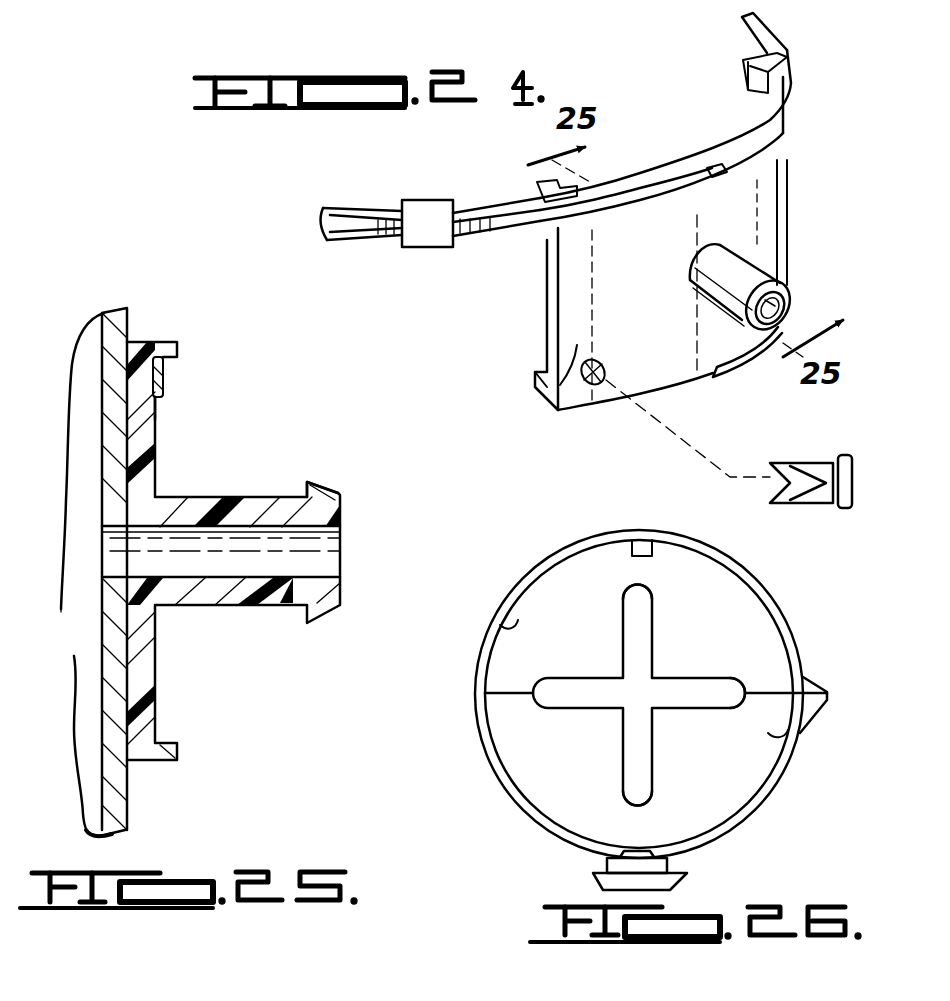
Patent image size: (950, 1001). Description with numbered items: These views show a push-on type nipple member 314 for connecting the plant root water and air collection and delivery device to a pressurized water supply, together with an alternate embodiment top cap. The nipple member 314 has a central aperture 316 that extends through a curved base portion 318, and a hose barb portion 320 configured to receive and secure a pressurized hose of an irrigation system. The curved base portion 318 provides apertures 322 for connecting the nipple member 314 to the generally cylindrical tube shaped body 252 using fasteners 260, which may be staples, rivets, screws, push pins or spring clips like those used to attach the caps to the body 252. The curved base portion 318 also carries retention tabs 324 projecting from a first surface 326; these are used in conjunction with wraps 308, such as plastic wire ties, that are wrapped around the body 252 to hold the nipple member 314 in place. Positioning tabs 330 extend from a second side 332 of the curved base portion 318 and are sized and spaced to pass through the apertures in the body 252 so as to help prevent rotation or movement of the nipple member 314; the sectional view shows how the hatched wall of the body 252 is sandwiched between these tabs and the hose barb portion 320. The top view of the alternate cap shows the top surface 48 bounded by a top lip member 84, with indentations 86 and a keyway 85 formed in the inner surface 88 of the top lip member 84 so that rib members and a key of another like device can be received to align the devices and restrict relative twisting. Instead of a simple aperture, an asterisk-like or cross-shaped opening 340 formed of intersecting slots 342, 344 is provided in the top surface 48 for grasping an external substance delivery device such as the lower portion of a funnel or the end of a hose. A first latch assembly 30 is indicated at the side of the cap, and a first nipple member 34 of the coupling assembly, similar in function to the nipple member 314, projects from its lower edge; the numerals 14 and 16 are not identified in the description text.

In FIG. 24, the wraps 308 is at (483, 206).
In FIG. 25, the wraps 308 is at (163, 379).
In FIG. 24, the retention tabs 324 is at (770, 150).
In FIG. 25, the retention tabs 324 is at (177, 347).
In FIG. 24, the nipple member 314 is at (803, 294).
In FIG. 24, the second side 332 is at (546, 283).
In FIG. 25, the second side 332 is at (98, 666).
In FIG. 24, the curved base portion 318 is at (577, 300).
In FIG. 24, the positioning tabs 330 is at (535, 378).
In FIG. 24, the first surface 326 is at (577, 348).
In FIG. 25, the first surface 326 is at (155, 416).
In FIG. 24, the apertures 322 is at (592, 385).
In FIG. 24, the central aperture 316 is at (740, 327).
In FIG. 25, the central aperture 316 is at (322, 537).
In FIG. 24, the fasteners 260 is at (840, 463).
In FIG. 25, the hose barb portion 320 is at (321, 494).
In FIG. 25, the body 252 is at (113, 793).
In FIG. 26, the outer ring 14 is at (783, 615).
In FIG. 26, the inner ring 16 is at (740, 827).
In FIG. 26, the top lip member 84 is at (553, 564).
In FIG. 26, the indentations 86 is at (510, 624).
In FIG. 26, the inner surface 88 is at (641, 548).
In FIG. 26, the top surface 48 is at (738, 599).
In FIG. 26, the cross-shaped opening 340 is at (640, 689).
In FIG. 26, the intersecting slot 342 is at (643, 611).
In FIG. 26, the intersecting slot 344 is at (695, 685).
In FIG. 26, the keyway 85 is at (632, 843).
In FIG. 26, the first latch assembly 30 is at (832, 665).
In FIG. 26, the first nipple member 34 is at (607, 864).